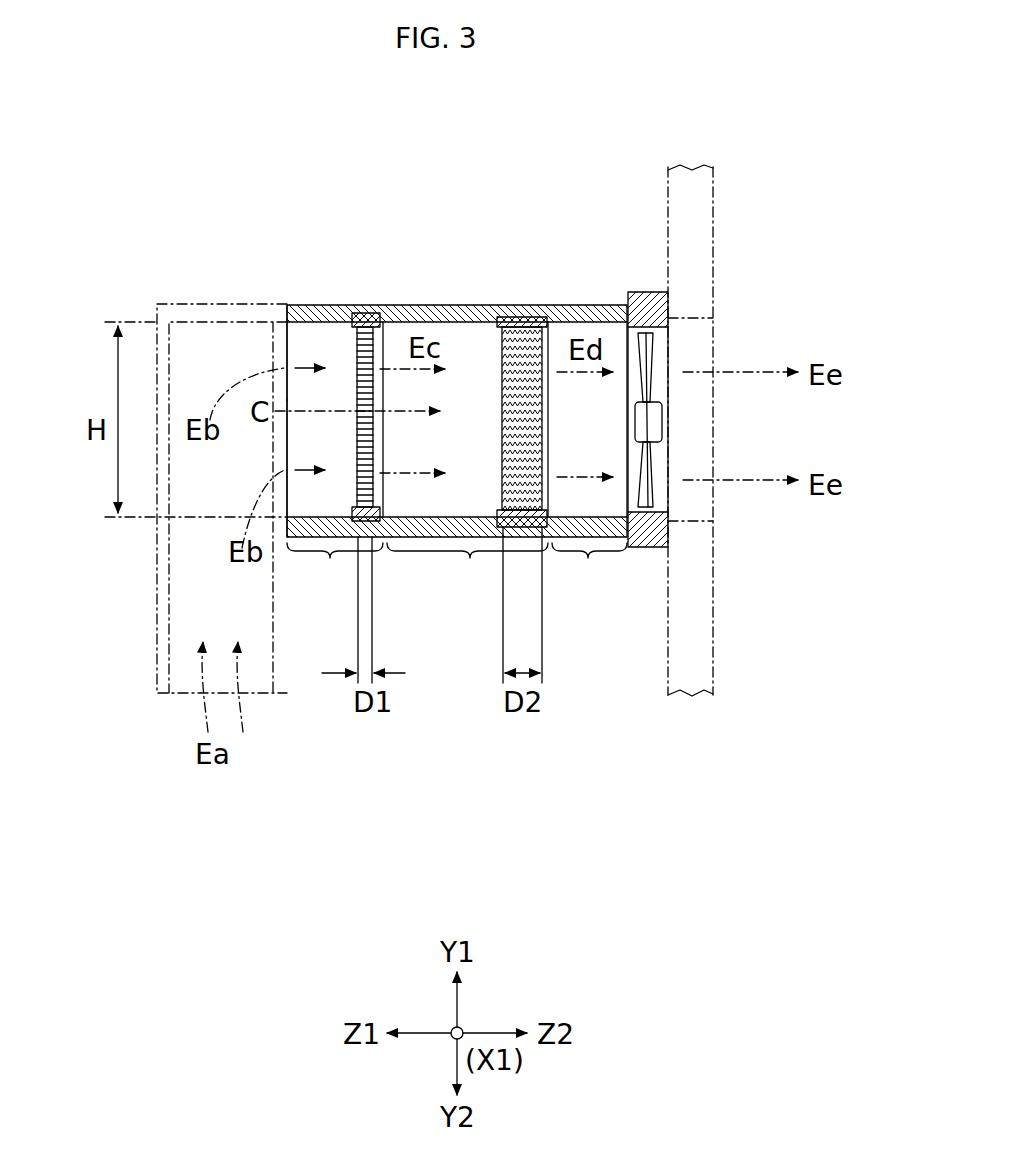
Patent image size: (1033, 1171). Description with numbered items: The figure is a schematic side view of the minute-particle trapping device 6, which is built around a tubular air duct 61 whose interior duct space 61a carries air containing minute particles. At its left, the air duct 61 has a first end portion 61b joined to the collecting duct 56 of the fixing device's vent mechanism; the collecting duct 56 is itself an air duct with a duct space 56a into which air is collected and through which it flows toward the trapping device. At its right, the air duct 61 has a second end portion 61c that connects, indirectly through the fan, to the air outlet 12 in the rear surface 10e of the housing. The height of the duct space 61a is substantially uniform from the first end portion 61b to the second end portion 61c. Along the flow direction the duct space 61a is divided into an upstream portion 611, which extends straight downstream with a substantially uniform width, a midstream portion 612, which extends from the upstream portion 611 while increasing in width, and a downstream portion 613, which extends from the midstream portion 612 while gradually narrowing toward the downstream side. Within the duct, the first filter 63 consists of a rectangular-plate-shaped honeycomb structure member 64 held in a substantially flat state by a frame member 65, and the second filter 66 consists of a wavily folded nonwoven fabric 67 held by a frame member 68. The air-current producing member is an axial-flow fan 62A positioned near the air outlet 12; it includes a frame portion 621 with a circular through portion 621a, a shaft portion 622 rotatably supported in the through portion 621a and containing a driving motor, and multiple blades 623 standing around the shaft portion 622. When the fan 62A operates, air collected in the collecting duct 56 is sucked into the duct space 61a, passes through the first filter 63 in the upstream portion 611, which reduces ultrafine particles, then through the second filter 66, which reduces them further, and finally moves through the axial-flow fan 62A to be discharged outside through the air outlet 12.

The trapping device 6 is at (490, 362).
The rear surface 10e is at (736, 387).
The air outlet 12 is at (688, 318).
The collecting duct 56 is at (168, 498).
The duct space 56a is at (187, 614).
The air duct 61 is at (401, 429).
The duct space 61a is at (297, 343).
The first end portion 61b is at (287, 447).
The second end portion 61c is at (622, 530).
The upstream portion 611 is at (335, 566).
The midstream portion 612 is at (467, 567).
The downstream portion 613 is at (587, 567).
The first filter 63 is at (368, 370).
The honeycomb structure member 64 is at (375, 437).
The frame member 65 is at (358, 318).
The second filter 66 is at (524, 373).
The nonwoven fabric 67 is at (540, 435).
The frame member 68 is at (520, 315).
The axial-flow fan 62A is at (705, 421).
The frame portion 621 is at (707, 488).
The through portion 621a is at (660, 458).
The shaft portion 622 is at (655, 420).
The blades 623 is at (655, 355).